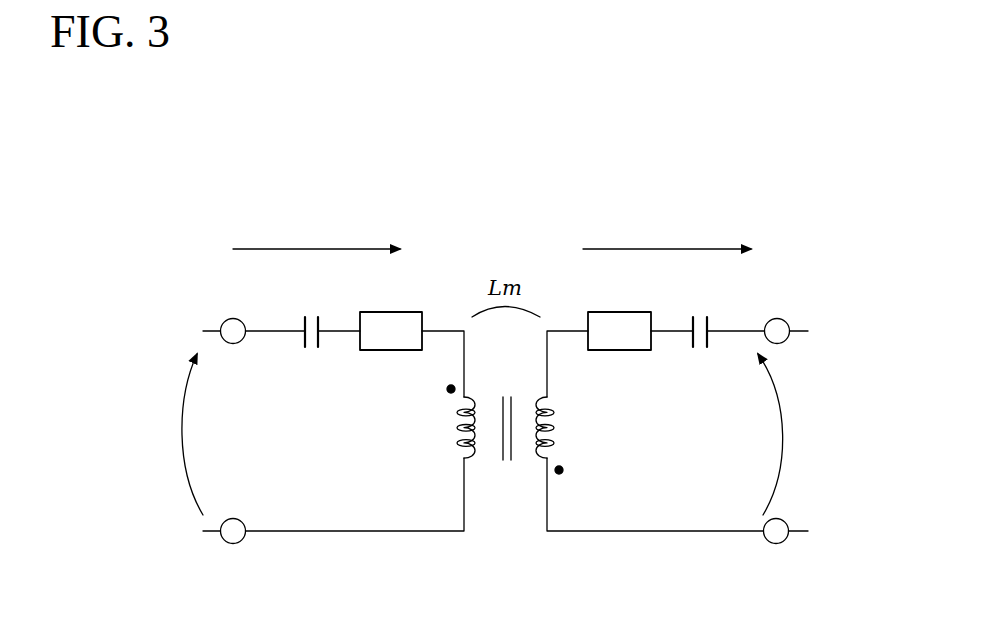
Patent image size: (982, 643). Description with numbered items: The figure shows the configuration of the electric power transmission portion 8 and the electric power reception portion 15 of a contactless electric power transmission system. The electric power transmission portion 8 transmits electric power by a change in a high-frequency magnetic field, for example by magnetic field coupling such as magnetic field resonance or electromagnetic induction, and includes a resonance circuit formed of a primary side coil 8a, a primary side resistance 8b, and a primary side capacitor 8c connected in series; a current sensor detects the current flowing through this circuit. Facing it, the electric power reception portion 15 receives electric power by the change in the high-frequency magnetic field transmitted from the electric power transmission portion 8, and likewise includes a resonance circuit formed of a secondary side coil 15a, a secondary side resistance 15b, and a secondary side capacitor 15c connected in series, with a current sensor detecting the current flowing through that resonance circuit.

The electric power transmission portion 8 is at (200, 220).
The primary side coil 8a is at (473, 459).
The primary side resistance 8b is at (417, 312).
The primary side capacitor 8c is at (303, 320).
The electric power reception portion 15 is at (775, 220).
The secondary side coil 15a is at (537, 459).
The secondary side resistance 15b is at (592, 311).
The secondary side capacitor 15c is at (710, 322).